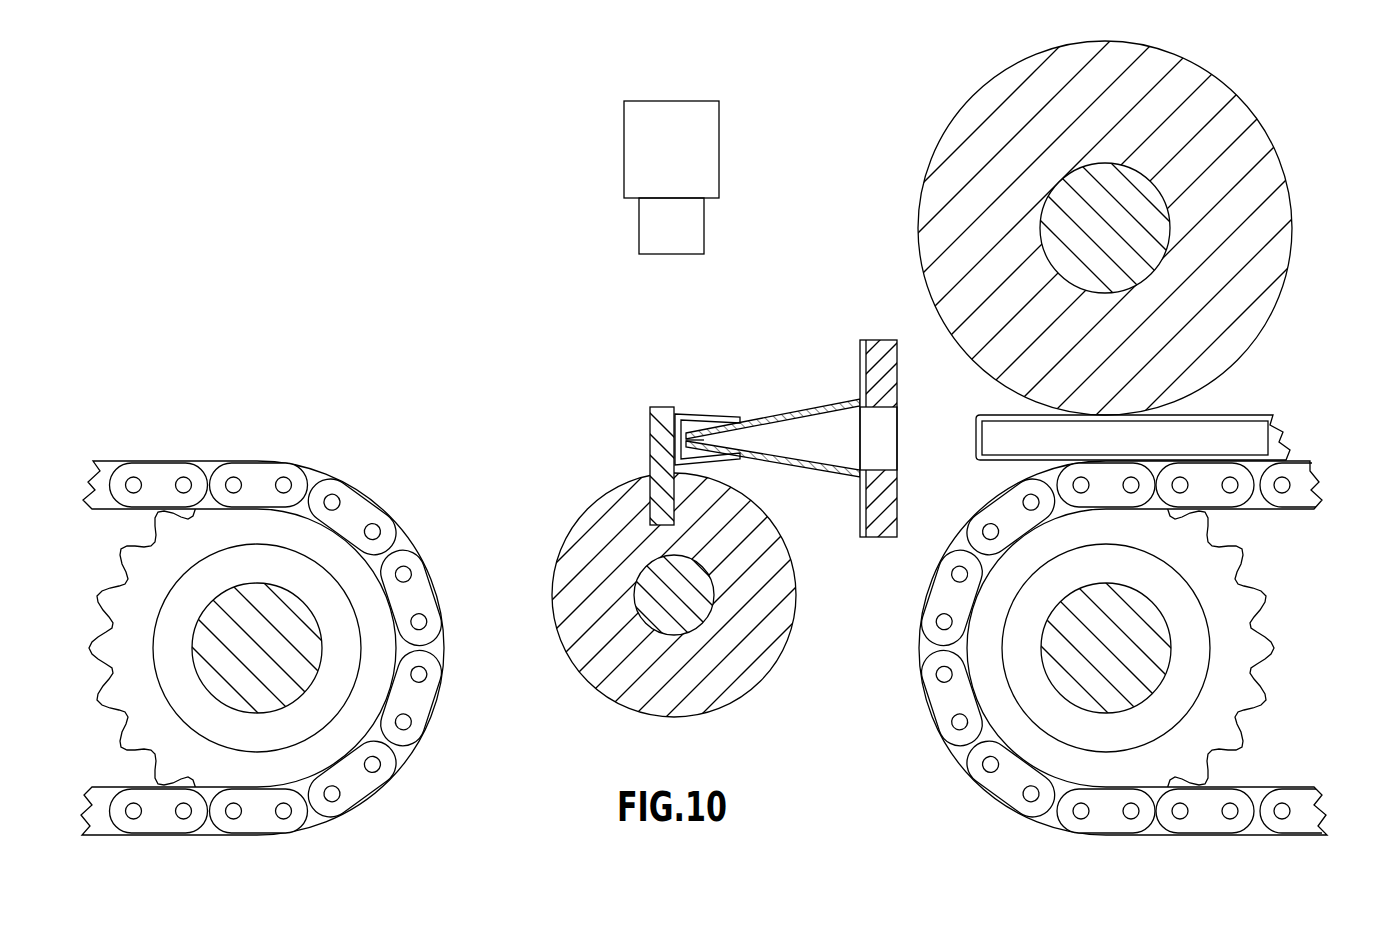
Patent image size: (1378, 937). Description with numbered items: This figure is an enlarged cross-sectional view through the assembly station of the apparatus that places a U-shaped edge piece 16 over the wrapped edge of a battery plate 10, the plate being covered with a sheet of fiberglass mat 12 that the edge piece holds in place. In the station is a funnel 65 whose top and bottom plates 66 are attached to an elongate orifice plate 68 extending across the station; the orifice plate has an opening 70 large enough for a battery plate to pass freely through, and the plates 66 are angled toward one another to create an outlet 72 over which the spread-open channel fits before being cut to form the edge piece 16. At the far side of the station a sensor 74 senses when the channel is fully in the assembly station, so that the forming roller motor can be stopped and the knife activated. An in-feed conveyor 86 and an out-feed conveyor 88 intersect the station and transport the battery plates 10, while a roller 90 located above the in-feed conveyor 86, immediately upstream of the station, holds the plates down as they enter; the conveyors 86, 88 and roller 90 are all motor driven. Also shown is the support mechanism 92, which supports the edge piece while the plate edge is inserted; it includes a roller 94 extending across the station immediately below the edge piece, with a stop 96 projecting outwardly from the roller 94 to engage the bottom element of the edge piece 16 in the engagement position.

The battery plate 10 is at (1149, 406).
The fiberglass mat 12 is at (1243, 413).
The edge piece 16 is at (724, 413).
The funnel 65 is at (773, 425).
The top and bottom plates 66 is at (818, 402).
The orifice plate 68 is at (887, 412).
The opening 70 is at (887, 429).
The outlet 72 is at (718, 440).
The sensor 74 is at (708, 150).
The in-feed conveyor 86 is at (957, 750).
The out-feed conveyor 88 is at (170, 462).
The roller 90 is at (925, 190).
The support mechanism 92 is at (672, 533).
The roller 94 is at (565, 567).
The stop 96 is at (665, 412).